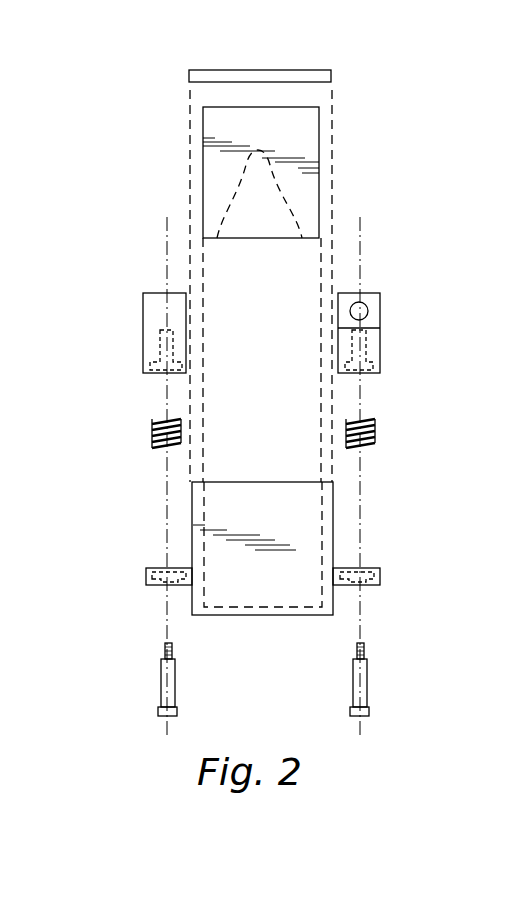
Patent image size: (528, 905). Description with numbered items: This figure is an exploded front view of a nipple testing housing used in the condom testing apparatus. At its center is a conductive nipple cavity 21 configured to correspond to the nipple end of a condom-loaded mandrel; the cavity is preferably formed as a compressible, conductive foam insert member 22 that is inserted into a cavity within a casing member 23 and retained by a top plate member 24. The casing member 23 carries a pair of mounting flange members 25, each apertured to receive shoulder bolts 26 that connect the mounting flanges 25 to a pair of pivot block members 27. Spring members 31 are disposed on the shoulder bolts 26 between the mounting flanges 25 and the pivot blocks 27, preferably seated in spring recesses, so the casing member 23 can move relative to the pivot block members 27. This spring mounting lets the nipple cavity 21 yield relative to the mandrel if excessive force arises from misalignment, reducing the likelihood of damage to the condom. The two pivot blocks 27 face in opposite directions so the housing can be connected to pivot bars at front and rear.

The conductive nipple cavity 21 is at (277, 236).
The compressible conductive foam insert member 22 is at (305, 128).
The casing member 23 is at (245, 570).
The top plate member 24 is at (270, 70).
The mounting flange members 25 is at (146, 574).
The shoulder bolts 26 is at (161, 685).
The pivot block members 27 is at (157, 293).
The spring members 31 is at (152, 442).